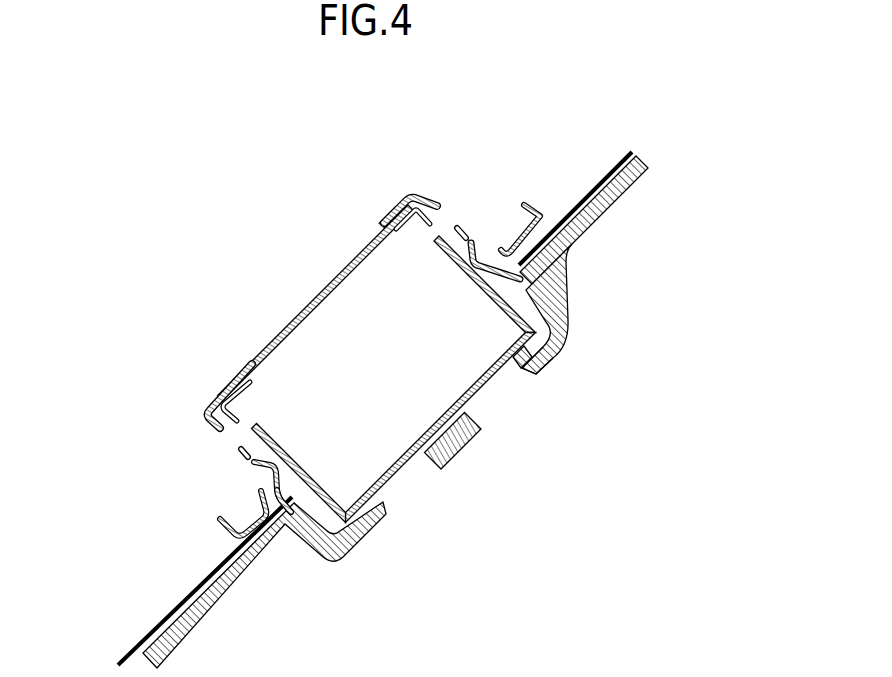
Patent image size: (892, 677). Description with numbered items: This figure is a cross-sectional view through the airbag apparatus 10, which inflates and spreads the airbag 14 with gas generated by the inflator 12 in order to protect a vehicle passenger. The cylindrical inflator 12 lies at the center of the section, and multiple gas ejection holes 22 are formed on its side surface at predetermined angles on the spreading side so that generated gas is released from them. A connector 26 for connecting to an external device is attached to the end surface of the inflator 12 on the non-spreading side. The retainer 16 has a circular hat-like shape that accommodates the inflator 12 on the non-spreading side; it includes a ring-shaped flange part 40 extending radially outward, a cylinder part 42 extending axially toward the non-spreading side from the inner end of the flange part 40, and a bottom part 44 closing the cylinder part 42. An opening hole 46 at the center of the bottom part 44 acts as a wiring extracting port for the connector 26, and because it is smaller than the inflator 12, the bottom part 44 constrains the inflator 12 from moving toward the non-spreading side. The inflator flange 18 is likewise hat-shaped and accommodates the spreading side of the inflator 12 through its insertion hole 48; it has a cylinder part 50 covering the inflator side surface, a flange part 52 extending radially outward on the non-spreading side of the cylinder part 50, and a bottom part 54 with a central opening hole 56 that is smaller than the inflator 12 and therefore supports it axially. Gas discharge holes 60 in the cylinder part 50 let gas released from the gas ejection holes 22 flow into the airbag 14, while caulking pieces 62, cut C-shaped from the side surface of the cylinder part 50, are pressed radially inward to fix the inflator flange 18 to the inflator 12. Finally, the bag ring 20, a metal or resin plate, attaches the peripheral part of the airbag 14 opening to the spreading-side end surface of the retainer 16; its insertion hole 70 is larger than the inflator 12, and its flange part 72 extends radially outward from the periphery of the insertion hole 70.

The airbag apparatus 10 is at (372, 152).
The inflator 12 is at (314, 306).
The airbag 14 is at (613, 166).
The retainer 16 is at (712, 228).
The inflator flange 18 is at (517, 152).
The bag ring 20 is at (526, 203).
The gas ejection holes 22 is at (248, 432).
The connector 26 is at (464, 452).
The flange part 40 is at (606, 213).
The cylinder part 42 is at (566, 300).
The bottom part 44 is at (556, 357).
The opening hole 46 is at (521, 378).
The insertion hole 48 is at (272, 484).
The cylinder part 50 is at (461, 226).
The flange part 52 is at (484, 256).
The bottom part 54 is at (405, 203).
The opening hole 56 is at (386, 222).
The gas discharge holes 60 is at (228, 437).
The caulking pieces 62 is at (256, 466).
The insertion hole 70 is at (268, 488).
The flange part 72 is at (235, 508).